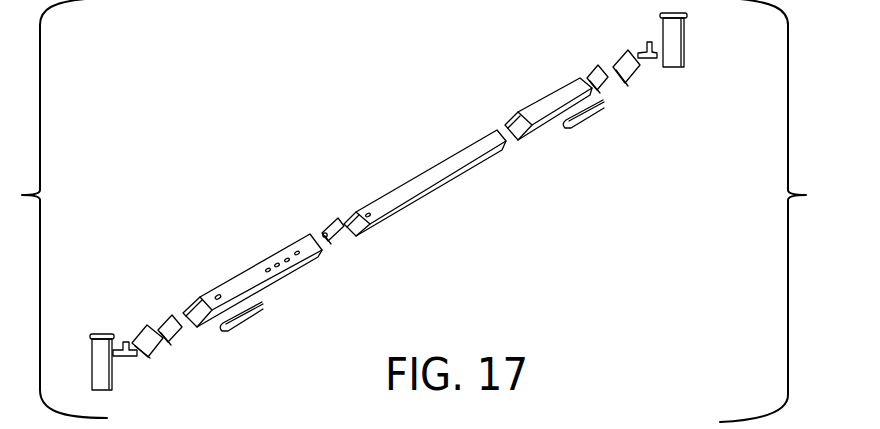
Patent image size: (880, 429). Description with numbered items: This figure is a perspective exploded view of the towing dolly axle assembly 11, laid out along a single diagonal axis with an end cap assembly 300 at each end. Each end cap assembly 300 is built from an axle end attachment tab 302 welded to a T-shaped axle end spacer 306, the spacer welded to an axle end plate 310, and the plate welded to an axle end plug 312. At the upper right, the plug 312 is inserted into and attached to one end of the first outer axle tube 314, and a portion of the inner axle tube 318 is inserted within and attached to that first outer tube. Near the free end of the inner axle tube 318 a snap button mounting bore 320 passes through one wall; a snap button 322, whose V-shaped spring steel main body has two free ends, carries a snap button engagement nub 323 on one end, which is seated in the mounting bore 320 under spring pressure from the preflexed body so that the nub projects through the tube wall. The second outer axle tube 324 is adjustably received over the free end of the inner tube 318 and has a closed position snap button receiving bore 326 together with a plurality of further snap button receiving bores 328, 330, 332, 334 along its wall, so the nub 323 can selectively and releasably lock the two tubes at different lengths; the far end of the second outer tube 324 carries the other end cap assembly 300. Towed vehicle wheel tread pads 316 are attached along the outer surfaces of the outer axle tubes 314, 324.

The dolly axle assembly 11 is at (462, 197).
The end cap assembly 300 is at (178, 310).
The axle end attachment tab 302 is at (107, 380).
The axle end spacer 306 is at (127, 358).
The axle end plate 310 is at (150, 348).
The axle end plug 312 is at (178, 334).
The first outer axle tube 314 is at (547, 105).
The towed vehicle wheel tread pad 316 is at (257, 309).
The inner axle tube 318 is at (456, 160).
The snap button mounting bore 320 is at (369, 217).
The snap button 322 is at (333, 243).
The snap button engagement nub 323 is at (327, 228).
The second outer axle tube 324 is at (290, 278).
The closed position snap button receiving bore 326 is at (218, 297).
The snap button receiving bore 328 is at (267, 270).
The snap button receiving bore 330 is at (277, 265).
The snap button receiving bore 332 is at (287, 260).
The snap button receiving bore 334 is at (297, 253).